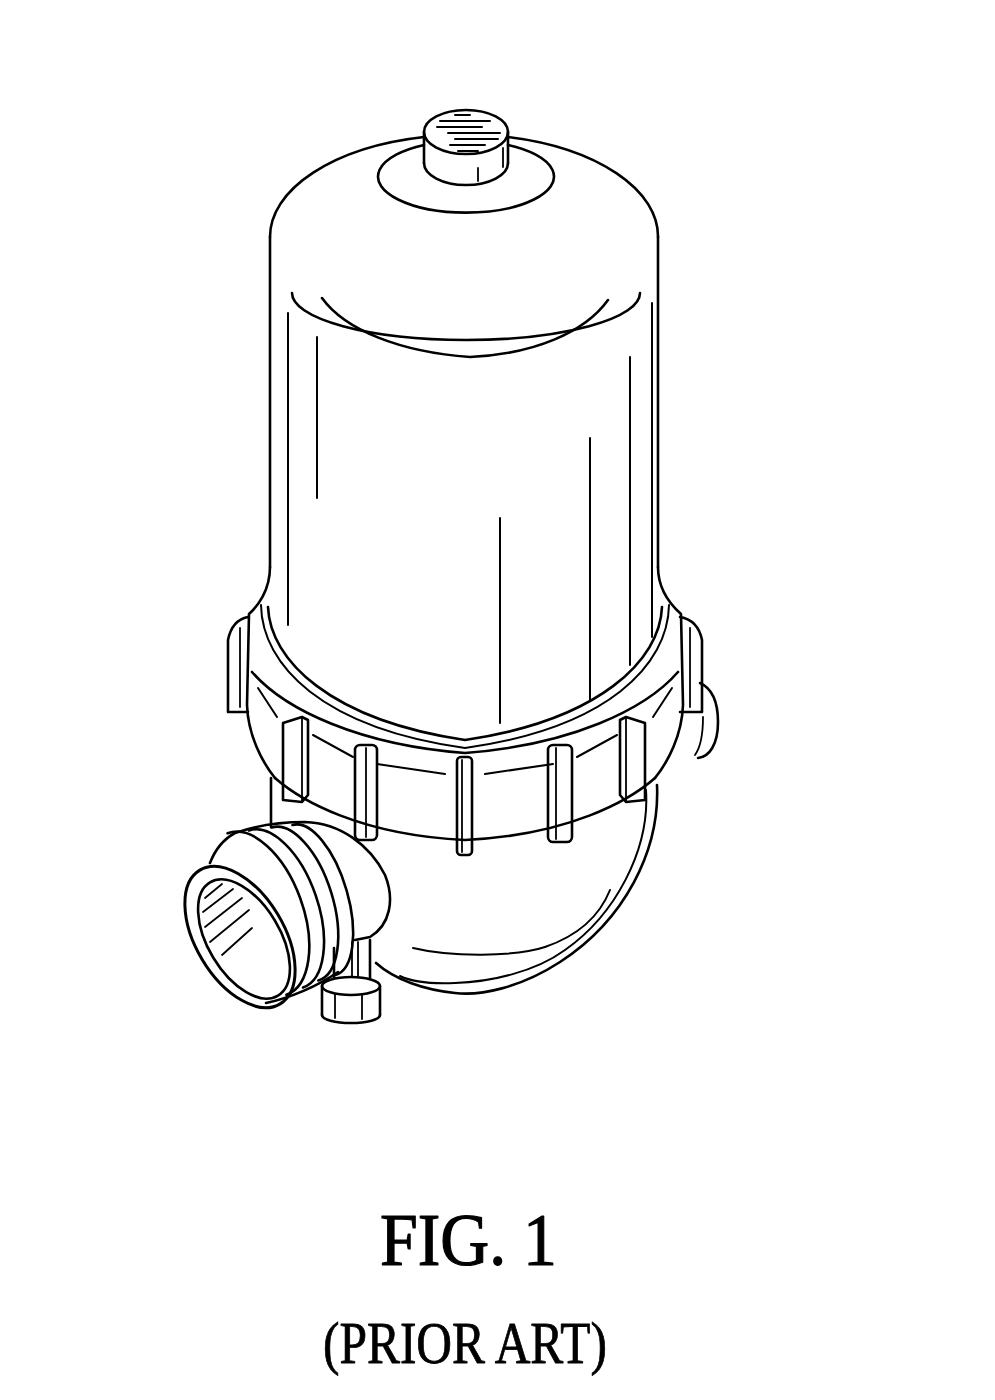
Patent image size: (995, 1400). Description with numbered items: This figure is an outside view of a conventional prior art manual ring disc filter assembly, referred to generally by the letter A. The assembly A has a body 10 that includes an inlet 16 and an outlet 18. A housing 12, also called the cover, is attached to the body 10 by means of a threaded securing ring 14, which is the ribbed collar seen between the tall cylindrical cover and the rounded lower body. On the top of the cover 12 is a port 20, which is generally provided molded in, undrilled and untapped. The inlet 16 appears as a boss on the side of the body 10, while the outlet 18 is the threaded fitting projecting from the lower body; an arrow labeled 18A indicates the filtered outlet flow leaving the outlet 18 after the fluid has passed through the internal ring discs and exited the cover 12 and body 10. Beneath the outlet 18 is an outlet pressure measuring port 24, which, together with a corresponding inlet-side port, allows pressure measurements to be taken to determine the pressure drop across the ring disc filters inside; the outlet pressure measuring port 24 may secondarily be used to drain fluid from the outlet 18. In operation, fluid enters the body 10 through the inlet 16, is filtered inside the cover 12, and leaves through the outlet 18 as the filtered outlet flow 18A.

The body 10 is at (610, 890).
The housing 12 is at (642, 442).
The threaded securing ring 14 is at (675, 700).
The inlet 16 is at (718, 727).
The outlet 18 is at (280, 1003).
The filtered outlet flow 18A is at (185, 967).
The port 20 is at (485, 137).
The outlet pressure measuring port 24 is at (357, 1025).
The manual ring disc filter assembly A is at (214, 433).